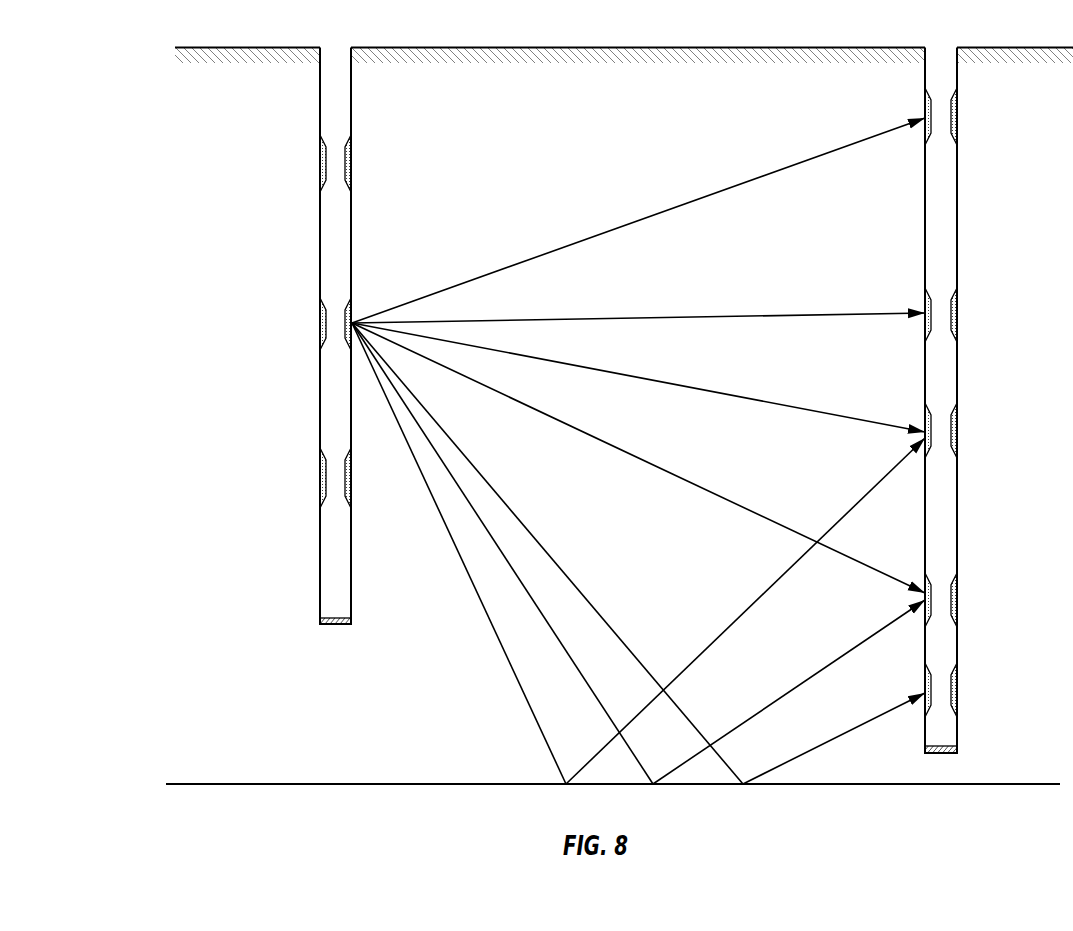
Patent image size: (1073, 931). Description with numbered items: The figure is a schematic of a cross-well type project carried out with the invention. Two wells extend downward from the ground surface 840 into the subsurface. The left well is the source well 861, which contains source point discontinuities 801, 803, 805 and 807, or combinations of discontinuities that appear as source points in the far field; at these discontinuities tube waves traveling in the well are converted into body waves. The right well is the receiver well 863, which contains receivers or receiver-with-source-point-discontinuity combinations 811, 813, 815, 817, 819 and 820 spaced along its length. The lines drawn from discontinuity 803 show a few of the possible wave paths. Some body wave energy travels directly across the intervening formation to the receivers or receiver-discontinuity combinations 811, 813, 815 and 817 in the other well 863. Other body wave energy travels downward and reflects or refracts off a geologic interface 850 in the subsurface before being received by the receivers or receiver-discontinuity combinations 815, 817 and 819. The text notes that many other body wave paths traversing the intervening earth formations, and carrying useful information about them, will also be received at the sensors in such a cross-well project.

The ground surface 840 is at (619, 38).
The source well 861 is at (310, 319).
The receiver well 863 is at (915, 384).
The source point discontinuity 801 is at (303, 161).
The source point discontinuity 803 is at (303, 321).
The source point discontinuity 805 is at (303, 476).
The source point discontinuity 807 is at (303, 606).
The receiver or receiver-discontinuity combination 811 is at (973, 116).
The receiver or receiver-discontinuity combination 813 is at (973, 315).
The receiver or receiver-discontinuity combination 815 is at (973, 430).
The receiver or receiver-discontinuity combination 817 is at (973, 598).
The receiver or receiver-discontinuity combination 819 is at (973, 689).
The receiver or receiver-discontinuity combination 820 is at (973, 738).
The geologic interface 850 is at (613, 767).